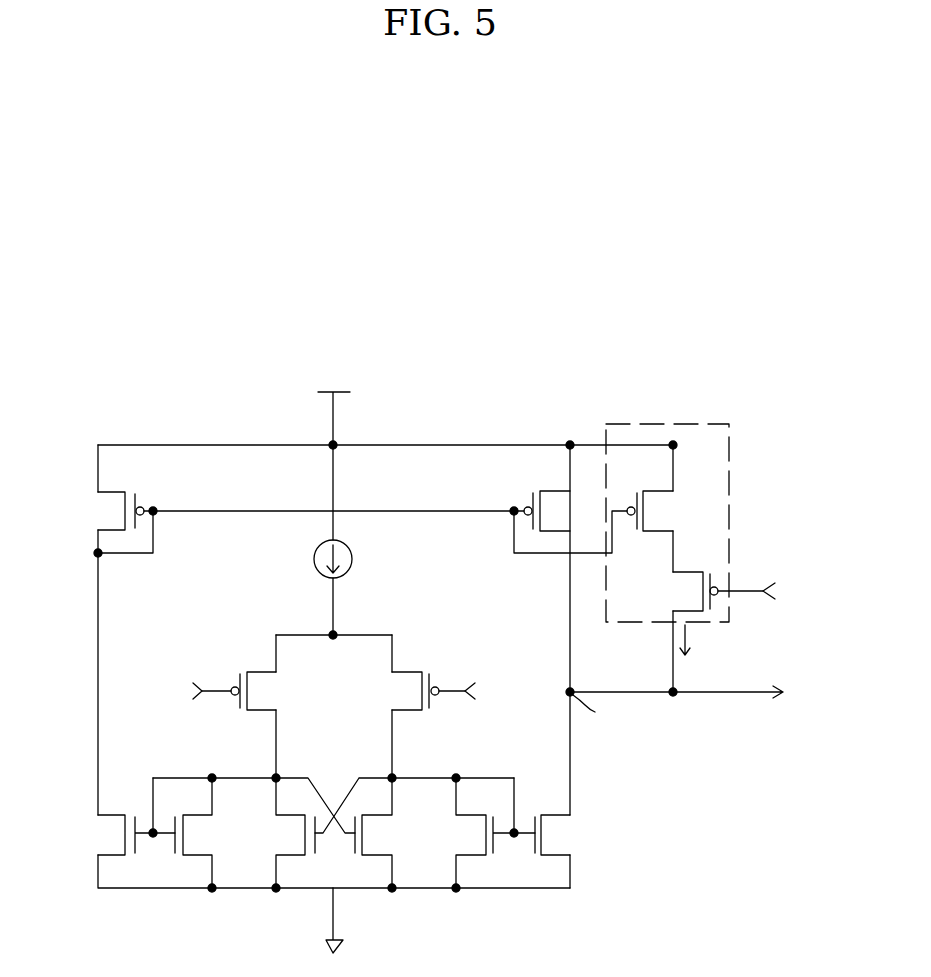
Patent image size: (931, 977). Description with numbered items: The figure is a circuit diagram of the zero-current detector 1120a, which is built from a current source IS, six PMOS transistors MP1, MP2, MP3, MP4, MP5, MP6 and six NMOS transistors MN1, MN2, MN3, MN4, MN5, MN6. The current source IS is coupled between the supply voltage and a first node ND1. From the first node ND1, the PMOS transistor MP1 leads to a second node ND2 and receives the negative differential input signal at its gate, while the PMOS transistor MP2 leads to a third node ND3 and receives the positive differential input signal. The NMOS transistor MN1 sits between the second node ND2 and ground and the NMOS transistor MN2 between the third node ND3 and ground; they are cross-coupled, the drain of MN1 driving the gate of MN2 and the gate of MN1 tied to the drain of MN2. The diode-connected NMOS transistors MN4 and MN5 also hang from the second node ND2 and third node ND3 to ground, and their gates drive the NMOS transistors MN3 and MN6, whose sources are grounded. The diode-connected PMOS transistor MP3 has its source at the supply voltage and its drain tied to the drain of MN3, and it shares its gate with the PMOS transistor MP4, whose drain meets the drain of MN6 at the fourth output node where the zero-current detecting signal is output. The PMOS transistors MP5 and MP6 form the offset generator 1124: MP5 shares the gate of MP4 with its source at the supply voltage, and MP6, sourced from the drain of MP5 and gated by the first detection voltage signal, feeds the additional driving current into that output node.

The zero-current detector 1120a is at (480, 288).
The offset generator 1124 is at (707, 423).
The current source IS is at (345, 559).
The PMOS transistor MP1 is at (245, 691).
The PMOS transistor MP2 is at (415, 691).
The PMOS transistor MP3 is at (114, 511).
The PMOS transistor MP4 is at (554, 511).
The PMOS transistor MP5 is at (657, 511).
The PMOS transistor MP6 is at (703, 591).
The NMOS transistor MN1 is at (283, 833).
The NMOS transistor MN2 is at (376, 833).
The NMOS transistor MN3 is at (109, 835).
The NMOS transistor MN4 is at (196, 833).
The NMOS transistor MN5 is at (473, 833).
The NMOS transistor MN6 is at (558, 835).
The first node ND1 is at (337, 632).
The second node ND2 is at (280, 775).
The third node ND3 is at (396, 775).